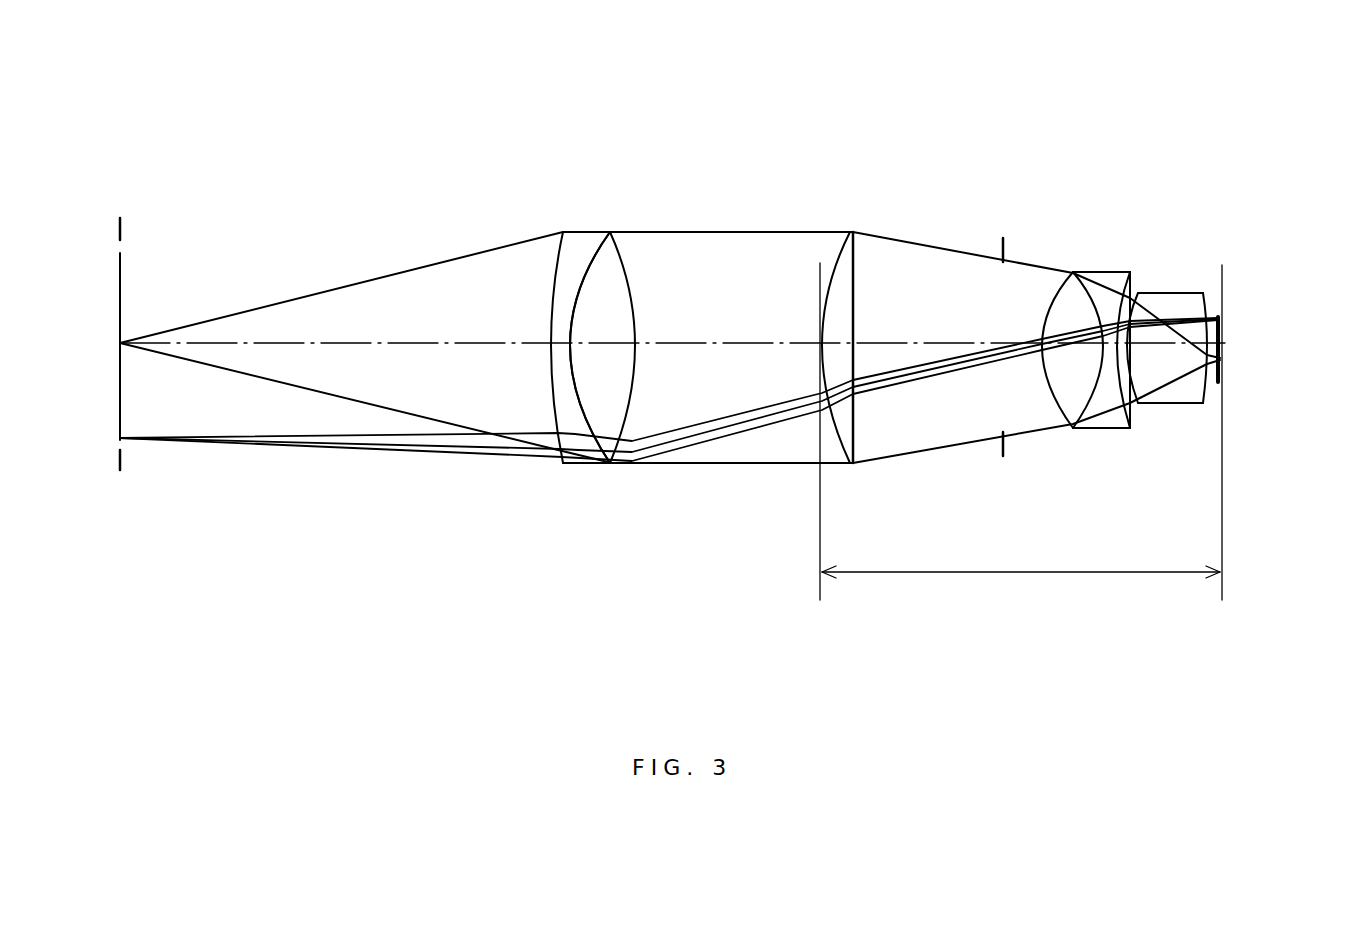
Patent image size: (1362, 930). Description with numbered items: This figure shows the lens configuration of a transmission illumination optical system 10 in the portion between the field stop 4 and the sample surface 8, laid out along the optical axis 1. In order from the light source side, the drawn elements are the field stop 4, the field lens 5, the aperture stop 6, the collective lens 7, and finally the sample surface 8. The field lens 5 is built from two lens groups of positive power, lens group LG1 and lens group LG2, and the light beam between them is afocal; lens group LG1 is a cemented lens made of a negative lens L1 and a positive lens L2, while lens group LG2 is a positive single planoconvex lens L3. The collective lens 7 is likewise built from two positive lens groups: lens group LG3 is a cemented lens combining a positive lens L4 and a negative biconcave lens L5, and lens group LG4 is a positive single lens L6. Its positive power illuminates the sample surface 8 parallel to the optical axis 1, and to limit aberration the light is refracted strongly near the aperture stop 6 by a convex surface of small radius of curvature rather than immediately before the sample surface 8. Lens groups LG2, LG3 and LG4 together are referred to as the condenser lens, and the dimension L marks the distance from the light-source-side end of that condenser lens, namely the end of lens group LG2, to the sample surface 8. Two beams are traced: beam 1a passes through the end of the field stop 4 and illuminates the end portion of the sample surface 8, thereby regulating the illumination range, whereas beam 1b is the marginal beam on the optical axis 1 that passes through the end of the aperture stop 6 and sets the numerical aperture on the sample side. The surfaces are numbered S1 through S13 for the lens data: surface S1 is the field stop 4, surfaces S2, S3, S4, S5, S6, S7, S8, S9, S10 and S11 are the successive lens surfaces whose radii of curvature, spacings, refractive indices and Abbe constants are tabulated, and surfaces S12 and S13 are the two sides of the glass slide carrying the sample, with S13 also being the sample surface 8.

The illumination optical system 10 is at (690, 14).
The field stop 4 is at (116, 236).
The optical axis 1 is at (670, 375).
The beam 1a is at (256, 440).
The beam 1b is at (215, 370).
The field lens 5 is at (853, 106).
The aperture stop 6 is at (1002, 250).
The collective lens 7 is at (1197, 101).
The sample surface 8 is at (1278, 432).
The lens group LG1 is at (623, 156).
The lens group LG2 is at (857, 156).
The lens group LG3 is at (1143, 153).
The lens group LG4 is at (1198, 153).
The negative lens L1 is at (563, 339).
The positive lens L2 is at (621, 339).
The positive single lens L3 is at (842, 338).
The positive lens L4 is at (1084, 324).
The negative lens L5 is at (1166, 324).
The positive single lens L6 is at (1215, 320).
The surface number S1 is at (121, 470).
The surface number S2 is at (553, 405).
The surface number S3 is at (583, 418).
The surface number S4 is at (627, 413).
The surface number S5 is at (823, 436).
The surface number S6 is at (858, 436).
The surface number S7 is at (1052, 418).
The surface number S8 is at (1098, 420).
The surface number S9 is at (1133, 420).
The surface number S10 is at (1140, 403).
The surface number S11 is at (1200, 396).
The surface number S12 is at (1207, 390).
The surface number S13 is at (1222, 360).
The distance L is at (1020, 431).